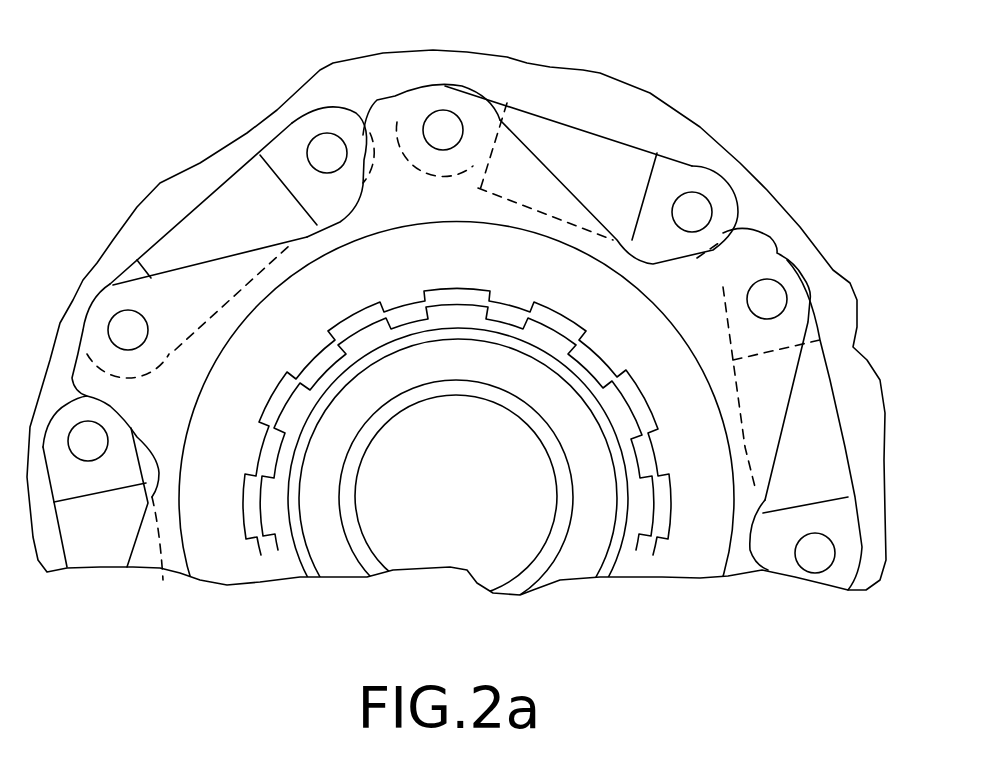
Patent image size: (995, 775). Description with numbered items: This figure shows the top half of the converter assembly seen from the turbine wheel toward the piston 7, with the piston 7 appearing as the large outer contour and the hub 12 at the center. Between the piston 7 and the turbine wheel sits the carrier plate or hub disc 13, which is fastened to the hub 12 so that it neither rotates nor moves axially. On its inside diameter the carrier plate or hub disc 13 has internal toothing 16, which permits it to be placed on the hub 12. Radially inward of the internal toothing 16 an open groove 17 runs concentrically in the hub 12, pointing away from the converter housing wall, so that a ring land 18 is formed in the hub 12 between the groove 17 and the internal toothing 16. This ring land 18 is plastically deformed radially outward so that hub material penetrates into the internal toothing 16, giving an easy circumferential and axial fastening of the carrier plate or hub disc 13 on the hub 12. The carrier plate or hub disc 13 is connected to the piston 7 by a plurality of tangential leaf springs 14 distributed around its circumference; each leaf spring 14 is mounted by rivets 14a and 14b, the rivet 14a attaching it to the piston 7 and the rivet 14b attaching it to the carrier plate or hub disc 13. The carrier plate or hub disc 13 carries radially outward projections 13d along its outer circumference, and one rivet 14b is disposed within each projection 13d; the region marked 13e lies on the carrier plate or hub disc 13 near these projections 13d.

The piston 7 is at (523, 70).
The hub 12 is at (327, 557).
The carrier plate or hub disc 13 is at (397, 200).
The projections 13d is at (125, 311).
The reinforcing rib 13e is at (333, 217).
The tangential leaf springs 14 is at (697, 180).
The rivet 14a is at (700, 215).
The rivet 14b is at (445, 130).
The internal toothing 16 is at (677, 518).
The open groove 17 is at (622, 563).
The ring land 18 is at (638, 570).